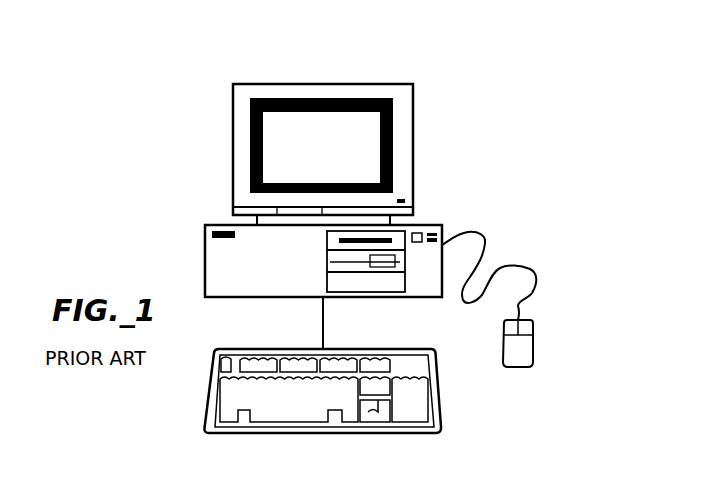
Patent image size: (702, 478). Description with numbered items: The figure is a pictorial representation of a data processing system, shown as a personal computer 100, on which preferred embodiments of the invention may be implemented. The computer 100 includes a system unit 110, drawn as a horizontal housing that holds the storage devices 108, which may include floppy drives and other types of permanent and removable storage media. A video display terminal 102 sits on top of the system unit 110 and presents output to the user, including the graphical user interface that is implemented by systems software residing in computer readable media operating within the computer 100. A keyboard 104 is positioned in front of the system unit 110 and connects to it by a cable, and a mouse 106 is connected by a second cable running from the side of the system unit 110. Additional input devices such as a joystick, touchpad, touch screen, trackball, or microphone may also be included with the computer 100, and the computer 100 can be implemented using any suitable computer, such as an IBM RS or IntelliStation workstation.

The computer 100 is at (516, 186).
The video display terminal 102 is at (413, 147).
The keyboard 104 is at (444, 410).
The mouse 106 is at (535, 338).
The storage devices 108 is at (325, 267).
The system unit 110 is at (418, 300).